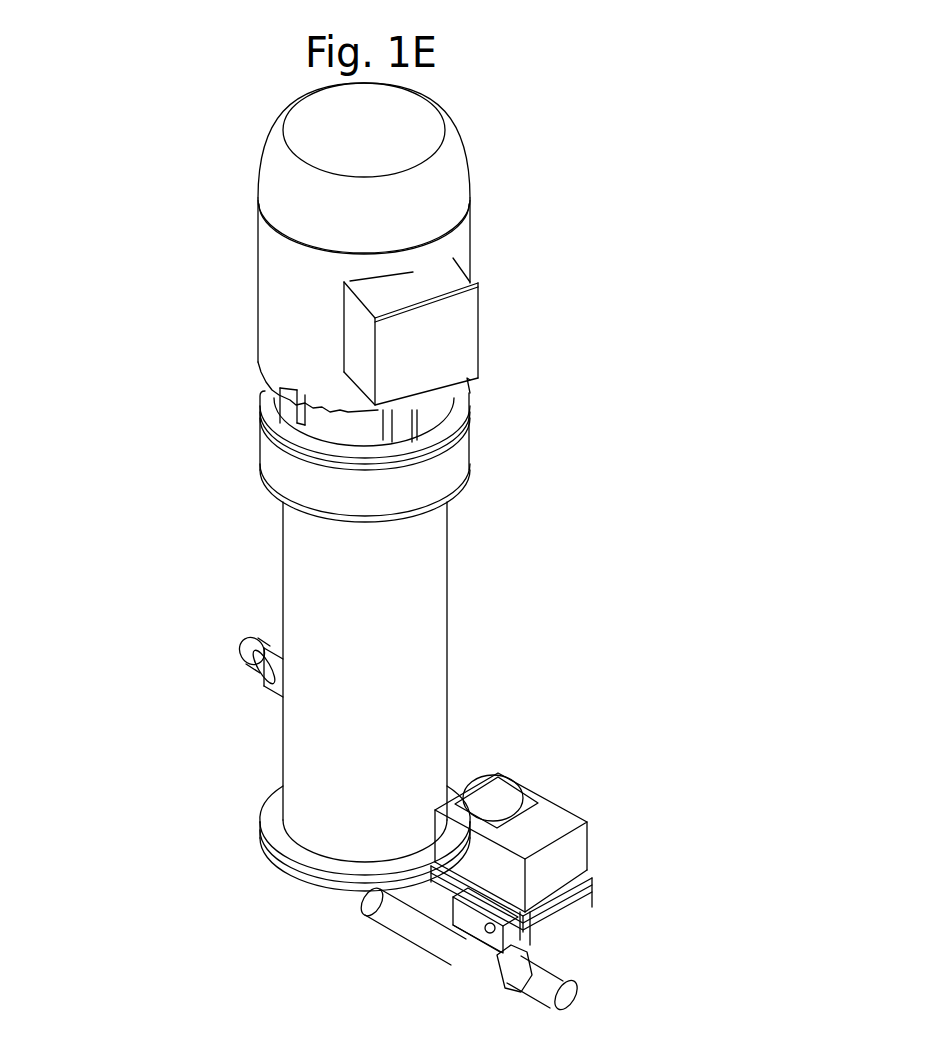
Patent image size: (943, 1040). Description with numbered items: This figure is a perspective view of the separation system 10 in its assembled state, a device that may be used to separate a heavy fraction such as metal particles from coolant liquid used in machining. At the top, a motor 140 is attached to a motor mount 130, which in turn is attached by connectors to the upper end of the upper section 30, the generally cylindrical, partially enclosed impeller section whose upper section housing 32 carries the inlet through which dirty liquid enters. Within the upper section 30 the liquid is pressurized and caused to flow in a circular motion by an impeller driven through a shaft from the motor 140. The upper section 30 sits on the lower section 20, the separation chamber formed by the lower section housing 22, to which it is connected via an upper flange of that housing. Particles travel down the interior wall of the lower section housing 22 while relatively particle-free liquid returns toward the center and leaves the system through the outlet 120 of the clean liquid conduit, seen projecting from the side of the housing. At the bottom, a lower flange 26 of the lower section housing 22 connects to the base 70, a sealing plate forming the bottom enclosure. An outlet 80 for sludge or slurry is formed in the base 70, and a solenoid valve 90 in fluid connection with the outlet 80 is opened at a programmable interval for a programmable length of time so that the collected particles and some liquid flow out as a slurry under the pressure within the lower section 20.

The separation system 10 is at (112, 149).
The motor mount 130 is at (477, 182).
The upper section 30 is at (483, 434).
The upper section housing 32 is at (263, 452).
The lower section 20 is at (457, 570).
The lower section housing 22 is at (312, 547).
The outlet 120 is at (237, 650).
The lower flange 26 is at (270, 803).
The base 70 is at (293, 868).
The outlet 80 is at (355, 892).
The solenoid valve 90 is at (597, 820).
The motor 140 is at (600, 998).